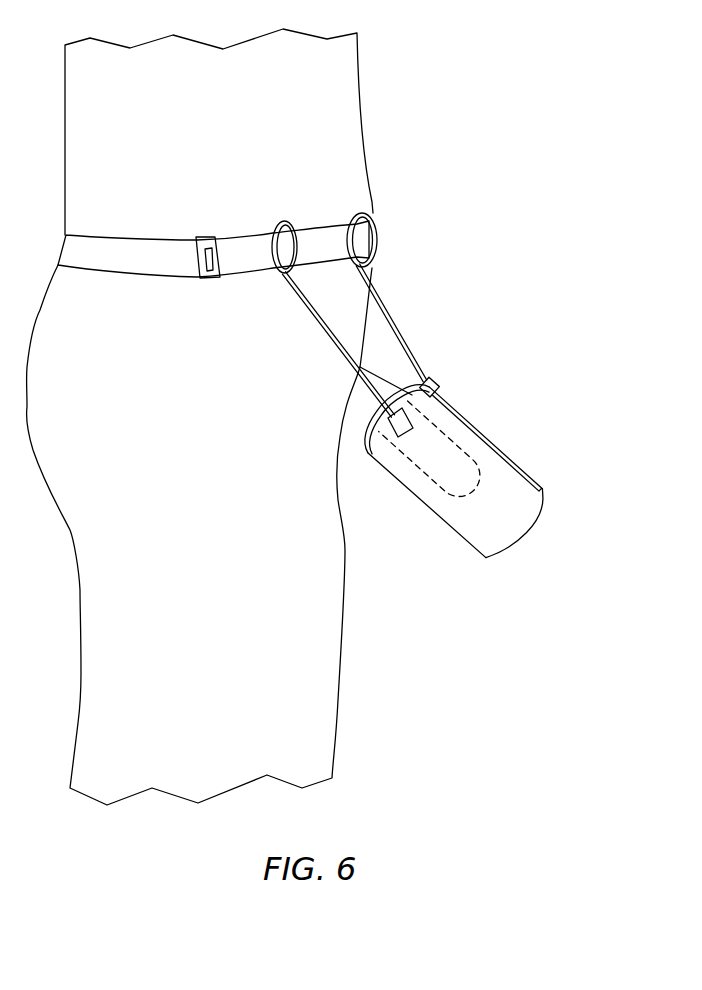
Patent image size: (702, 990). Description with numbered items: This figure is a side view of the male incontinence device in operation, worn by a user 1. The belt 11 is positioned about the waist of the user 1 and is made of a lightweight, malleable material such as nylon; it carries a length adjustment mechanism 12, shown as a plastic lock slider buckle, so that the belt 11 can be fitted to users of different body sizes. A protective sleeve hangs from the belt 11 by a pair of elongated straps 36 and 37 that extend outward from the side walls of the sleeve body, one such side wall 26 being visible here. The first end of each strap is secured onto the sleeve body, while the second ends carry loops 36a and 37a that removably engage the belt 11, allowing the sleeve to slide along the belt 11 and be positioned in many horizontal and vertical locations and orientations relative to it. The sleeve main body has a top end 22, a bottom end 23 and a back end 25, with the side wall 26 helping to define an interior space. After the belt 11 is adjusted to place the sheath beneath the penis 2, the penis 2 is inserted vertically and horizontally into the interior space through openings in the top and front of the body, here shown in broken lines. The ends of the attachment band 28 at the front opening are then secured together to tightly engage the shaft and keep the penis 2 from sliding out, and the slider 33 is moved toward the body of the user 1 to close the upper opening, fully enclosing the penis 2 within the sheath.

The user 1 is at (211, 112).
The belt 11 is at (108, 247).
The length adjustment mechanism 12 is at (212, 278).
The loop 36a is at (277, 224).
The loop 37a is at (374, 204).
The elongated strap 36 is at (322, 330).
The elongated strap 37 is at (388, 313).
The top end 22 is at (512, 454).
The bottom end 23 is at (430, 517).
The back end 25 is at (512, 547).
The side wall 26 is at (407, 470).
The penis 2 is at (450, 455).
The slider 33 is at (433, 380).
The attachment band 28 is at (365, 440).